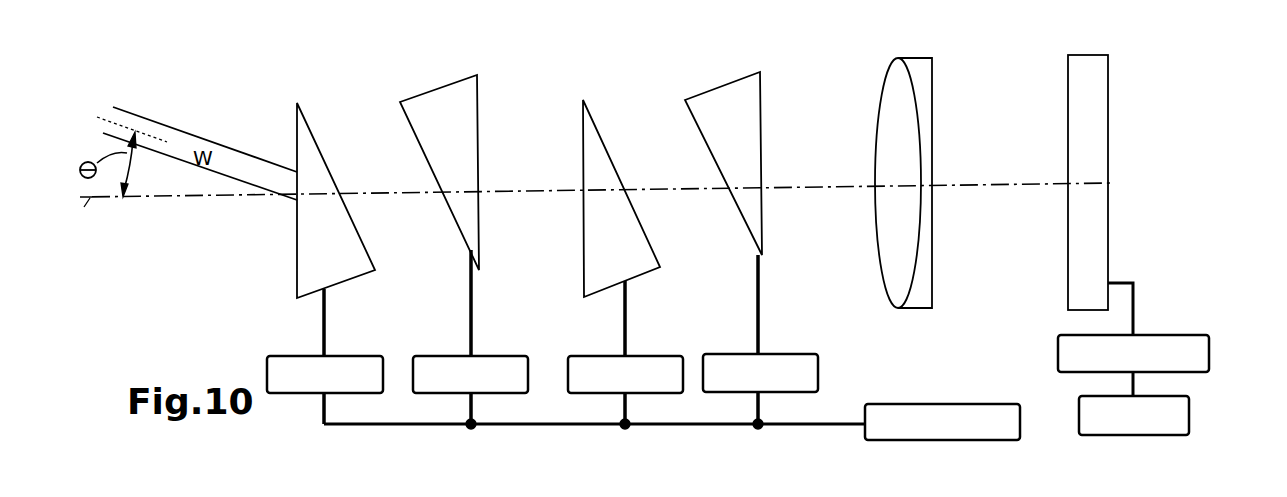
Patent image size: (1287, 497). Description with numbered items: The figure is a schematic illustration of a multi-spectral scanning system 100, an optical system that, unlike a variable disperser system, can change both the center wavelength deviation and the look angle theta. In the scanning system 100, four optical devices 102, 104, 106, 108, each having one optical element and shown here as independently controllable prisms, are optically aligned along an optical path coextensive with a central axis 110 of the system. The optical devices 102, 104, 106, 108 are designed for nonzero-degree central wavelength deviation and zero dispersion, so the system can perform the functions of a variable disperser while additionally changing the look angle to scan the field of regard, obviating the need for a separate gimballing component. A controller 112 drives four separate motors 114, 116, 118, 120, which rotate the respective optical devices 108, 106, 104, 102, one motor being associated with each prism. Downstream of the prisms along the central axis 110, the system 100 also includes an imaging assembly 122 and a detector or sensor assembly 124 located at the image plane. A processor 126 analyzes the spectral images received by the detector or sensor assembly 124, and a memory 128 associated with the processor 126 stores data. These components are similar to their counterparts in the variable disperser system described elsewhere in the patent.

The multi-spectral scanning system 100 is at (292, 64).
The optical device 102 is at (326, 165).
The optical device 104 is at (438, 86).
The optical device 106 is at (635, 263).
The optical device 108 is at (702, 93).
The central axis 110 is at (83, 209).
The controller 112 is at (998, 442).
The motor 114 is at (780, 353).
The motor 116 is at (640, 352).
The motor 118 is at (490, 355).
The motor 120 is at (338, 356).
The imaging assembly 122 is at (919, 32).
The detector or sensor assembly 124 is at (1108, 101).
The processor 126 is at (1210, 366).
The memory 128 is at (1190, 428).